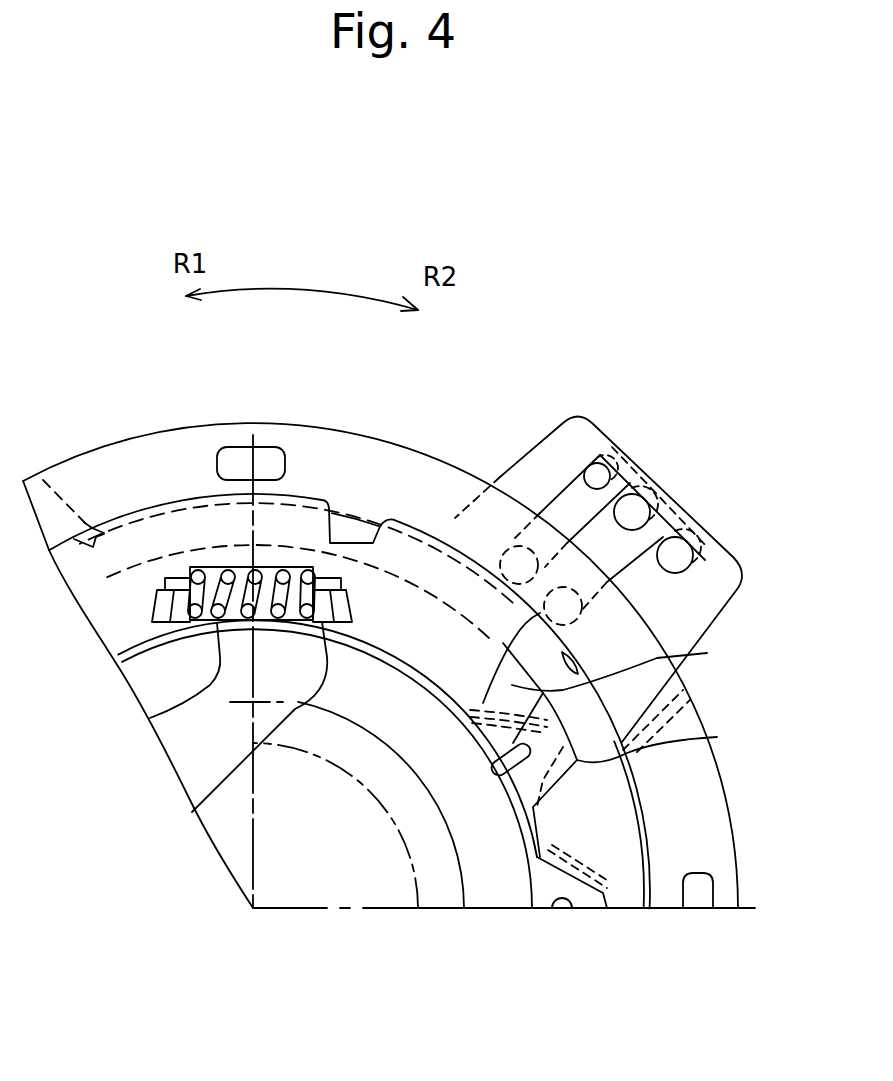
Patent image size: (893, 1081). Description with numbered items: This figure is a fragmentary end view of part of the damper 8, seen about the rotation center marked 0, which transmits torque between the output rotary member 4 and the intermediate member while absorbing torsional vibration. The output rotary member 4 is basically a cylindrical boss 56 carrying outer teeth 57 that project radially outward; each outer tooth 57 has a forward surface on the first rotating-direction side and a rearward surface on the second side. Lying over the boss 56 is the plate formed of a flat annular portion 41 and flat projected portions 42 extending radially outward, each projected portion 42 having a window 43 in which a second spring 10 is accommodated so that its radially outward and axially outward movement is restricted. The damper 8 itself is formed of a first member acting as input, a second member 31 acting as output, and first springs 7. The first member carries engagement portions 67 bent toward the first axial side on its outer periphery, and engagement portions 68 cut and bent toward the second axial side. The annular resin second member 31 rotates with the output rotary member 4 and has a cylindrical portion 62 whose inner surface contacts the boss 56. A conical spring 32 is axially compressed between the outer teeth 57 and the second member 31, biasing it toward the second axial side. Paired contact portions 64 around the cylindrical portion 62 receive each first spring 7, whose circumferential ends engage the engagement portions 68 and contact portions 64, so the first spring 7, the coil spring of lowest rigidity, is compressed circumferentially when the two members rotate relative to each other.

The rotation center axis 0 is at (253, 910).
The output rotary member 4 is at (428, 926).
The first spring 7 is at (230, 567).
The damper 8 is at (311, 490).
The second spring 10 is at (630, 507).
The second member 31 is at (707, 653).
The conical spring 32 is at (717, 737).
The annular portion 41 is at (623, 863).
The projected portion 42 is at (717, 567).
The window 43 is at (592, 470).
The boss 56 is at (490, 885).
The outer teeth 57 is at (588, 893).
The cylindrical portion 62 is at (158, 713).
The contact portions 64 is at (130, 617).
The engagement portion 67 is at (355, 545).
The engagement portions 68 is at (181, 578).